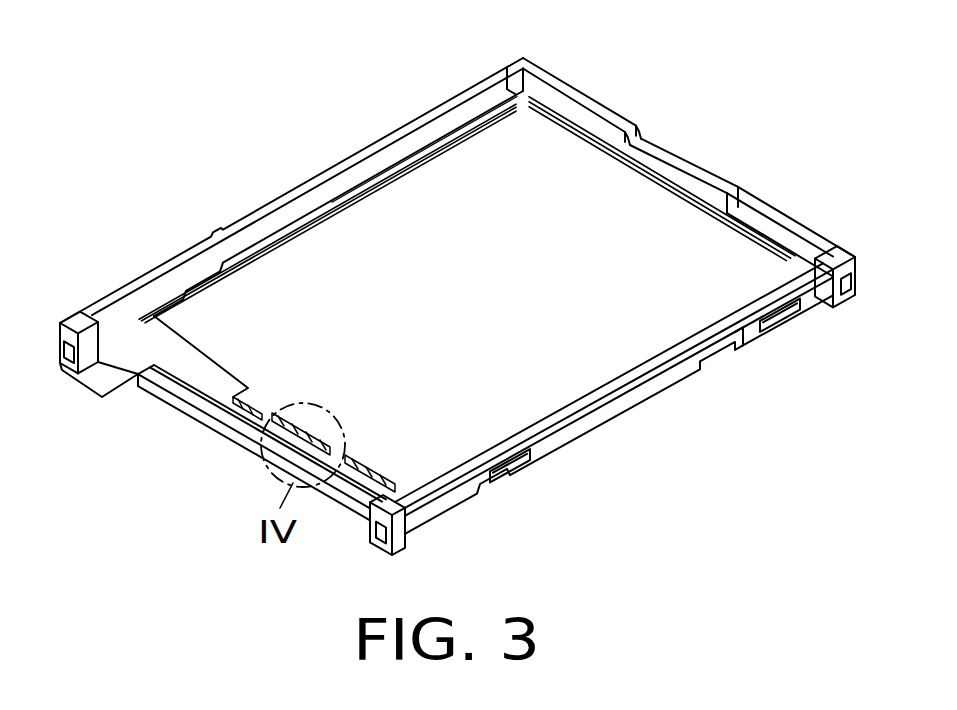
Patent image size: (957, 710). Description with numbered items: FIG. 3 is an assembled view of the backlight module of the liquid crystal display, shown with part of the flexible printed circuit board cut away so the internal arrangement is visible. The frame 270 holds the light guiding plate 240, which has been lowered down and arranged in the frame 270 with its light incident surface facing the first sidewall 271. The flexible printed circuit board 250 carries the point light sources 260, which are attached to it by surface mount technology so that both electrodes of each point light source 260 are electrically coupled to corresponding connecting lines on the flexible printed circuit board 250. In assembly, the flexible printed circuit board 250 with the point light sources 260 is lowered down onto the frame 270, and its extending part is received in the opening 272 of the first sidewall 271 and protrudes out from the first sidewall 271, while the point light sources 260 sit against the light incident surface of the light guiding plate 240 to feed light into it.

The light guiding plate 240 is at (655, 202).
The flexible printed circuit board 250 is at (190, 380).
The point light source 260 is at (247, 417).
The frame 270 is at (575, 107).
The first sidewall 271 is at (460, 490).
The opening 272 is at (135, 380).